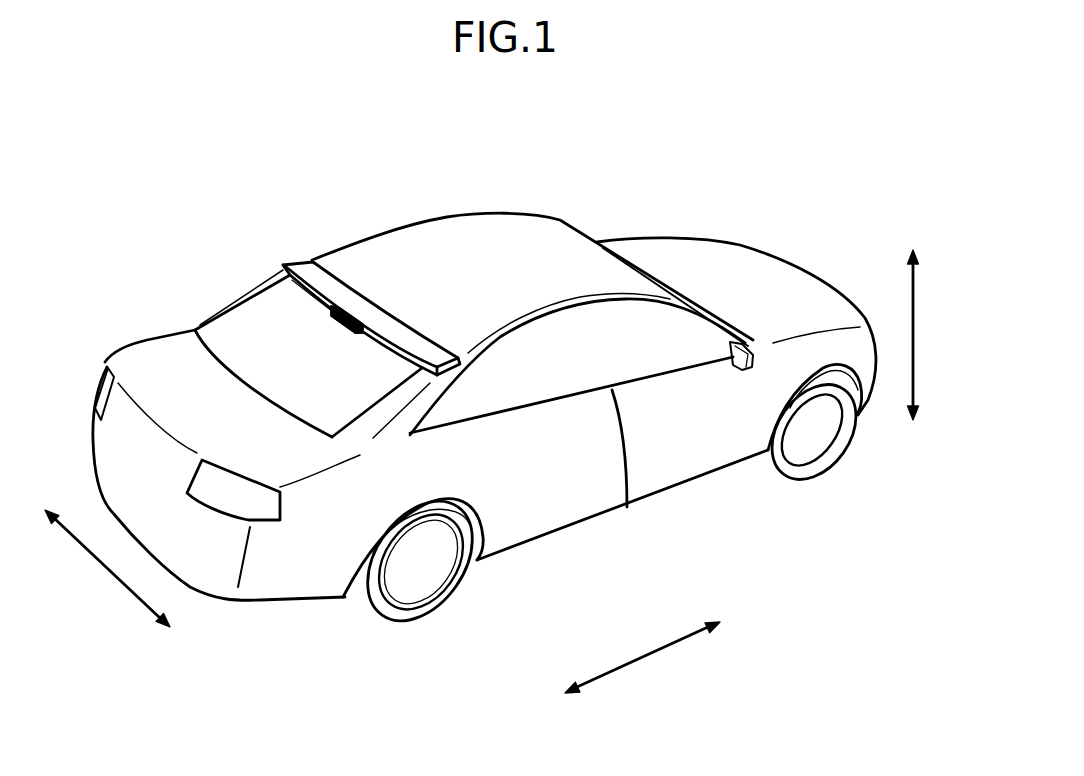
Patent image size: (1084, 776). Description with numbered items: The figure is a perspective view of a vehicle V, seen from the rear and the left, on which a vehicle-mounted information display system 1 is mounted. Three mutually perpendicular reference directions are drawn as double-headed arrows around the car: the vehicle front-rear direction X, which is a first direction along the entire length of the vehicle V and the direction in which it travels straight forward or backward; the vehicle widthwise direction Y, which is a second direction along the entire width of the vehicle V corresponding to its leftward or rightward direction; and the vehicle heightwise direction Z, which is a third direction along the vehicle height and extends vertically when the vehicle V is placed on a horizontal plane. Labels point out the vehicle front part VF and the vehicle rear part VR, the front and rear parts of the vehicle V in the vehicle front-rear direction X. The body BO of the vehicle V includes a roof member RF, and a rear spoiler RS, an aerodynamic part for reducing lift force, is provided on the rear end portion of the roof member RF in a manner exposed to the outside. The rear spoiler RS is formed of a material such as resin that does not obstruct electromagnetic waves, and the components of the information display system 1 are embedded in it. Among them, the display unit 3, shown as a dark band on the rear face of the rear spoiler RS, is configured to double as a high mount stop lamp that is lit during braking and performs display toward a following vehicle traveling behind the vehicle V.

The vehicle V is at (484, 192).
The roof member RF is at (547, 252).
The vehicle front part VF is at (726, 224).
The vehicle rear part VR is at (196, 257).
The body BO is at (489, 572).
The rear spoiler RS is at (317, 290).
The display unit 3 is at (340, 341).
The information display system 1 is at (315, 501).
The vehicle front-rear direction X is at (637, 657).
The vehicle widthwise direction Y is at (102, 563).
The vehicle heightwise direction Z is at (913, 318).